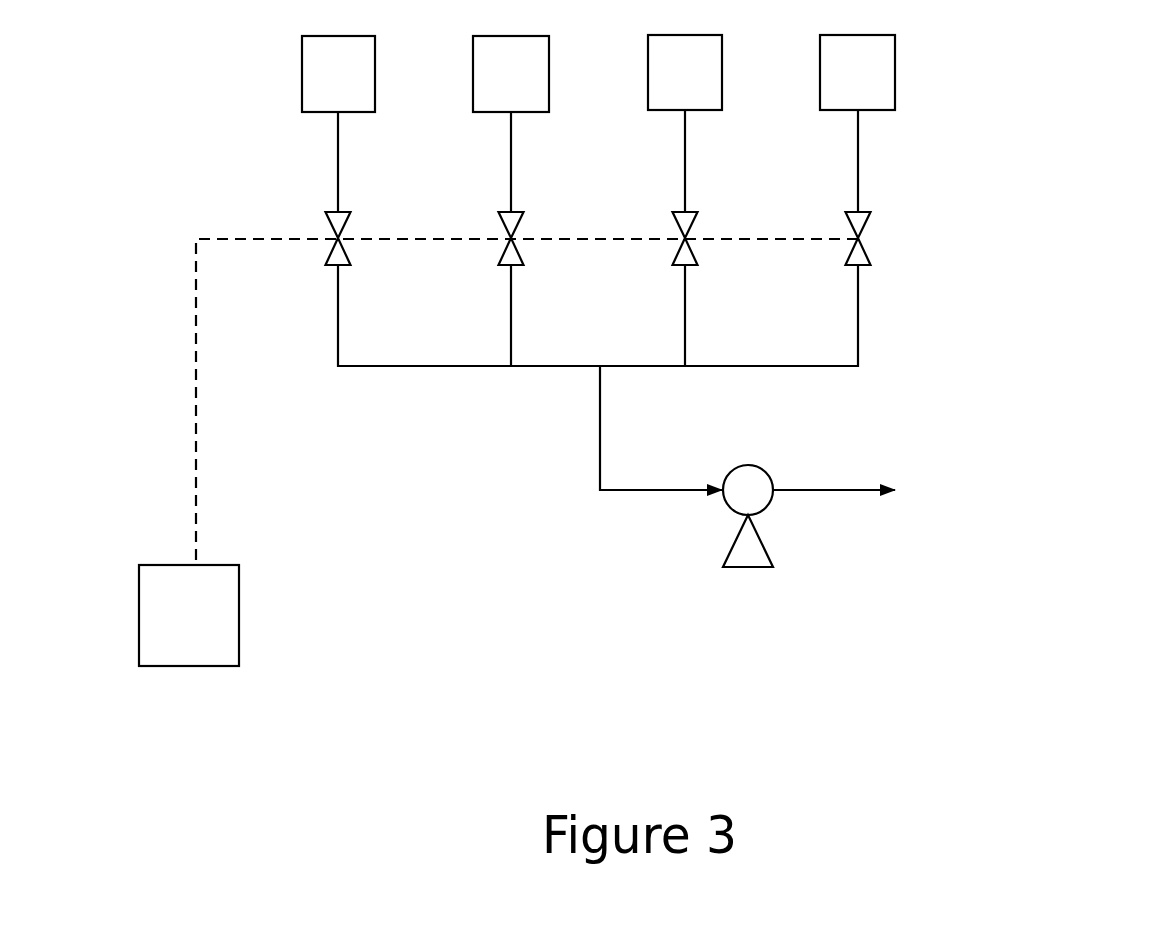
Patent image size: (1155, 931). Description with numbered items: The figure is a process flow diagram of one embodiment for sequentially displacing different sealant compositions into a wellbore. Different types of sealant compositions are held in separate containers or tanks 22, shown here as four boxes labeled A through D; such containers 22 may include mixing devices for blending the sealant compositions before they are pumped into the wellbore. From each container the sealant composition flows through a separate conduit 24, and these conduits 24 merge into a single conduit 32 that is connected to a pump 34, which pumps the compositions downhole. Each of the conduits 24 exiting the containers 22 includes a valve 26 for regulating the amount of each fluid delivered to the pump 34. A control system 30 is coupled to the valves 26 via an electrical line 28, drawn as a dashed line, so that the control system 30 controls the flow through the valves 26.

The containers or tanks 22 is at (968, 67).
The conduits 24 is at (932, 169).
The valves 26 is at (922, 238).
The electrical line 28 is at (192, 419).
The control system 30 is at (212, 639).
The single conduit 32 is at (648, 492).
The pump 34 is at (765, 467).